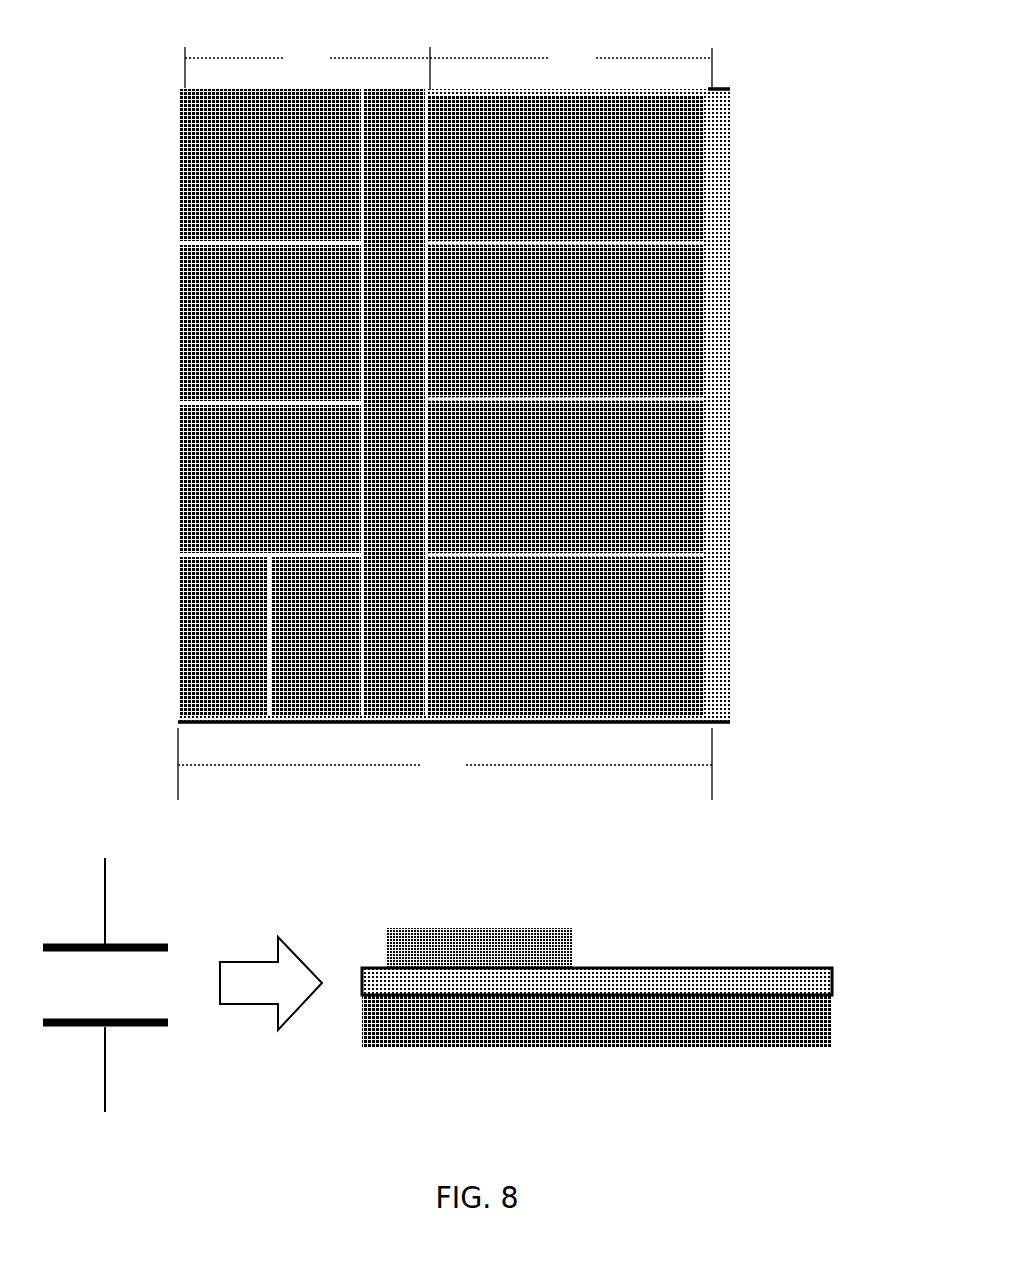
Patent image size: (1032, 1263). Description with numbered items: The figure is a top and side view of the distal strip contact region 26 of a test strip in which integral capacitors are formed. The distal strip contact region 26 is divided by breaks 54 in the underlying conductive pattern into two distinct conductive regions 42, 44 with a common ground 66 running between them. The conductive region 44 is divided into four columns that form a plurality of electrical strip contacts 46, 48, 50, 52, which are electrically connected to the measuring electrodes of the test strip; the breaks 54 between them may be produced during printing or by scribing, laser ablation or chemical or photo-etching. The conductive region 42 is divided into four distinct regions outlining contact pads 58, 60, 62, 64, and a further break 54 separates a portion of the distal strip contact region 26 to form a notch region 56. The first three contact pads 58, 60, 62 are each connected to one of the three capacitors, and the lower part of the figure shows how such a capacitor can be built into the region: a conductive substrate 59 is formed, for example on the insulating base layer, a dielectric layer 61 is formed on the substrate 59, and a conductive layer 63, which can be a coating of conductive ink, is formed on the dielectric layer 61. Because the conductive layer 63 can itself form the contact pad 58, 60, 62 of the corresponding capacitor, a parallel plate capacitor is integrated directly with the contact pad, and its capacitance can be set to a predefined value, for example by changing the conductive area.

The distal strip contact region 26 is at (445, 764).
The conductive region 42 is at (307, 67).
The conductive region 44 is at (571, 67).
The electrical strip contact 46 is at (565, 168).
The electrical strip contact 48 is at (565, 321).
The electrical strip contact 50 is at (565, 477).
The electrical strip contact 52 is at (565, 636).
The breaks 54 is at (422, 86).
The notch region 56 is at (224, 636).
The contact pad 58 is at (212, 178).
The contact pad 60 is at (256, 366).
The contact pad 62 is at (256, 450).
The contact pad 64 is at (348, 636).
The common ground 66 is at (394, 402).
The conductive layer 63 is at (432, 922).
The dielectric layer 61 is at (836, 974).
The conductive substrate 59 is at (578, 1047).